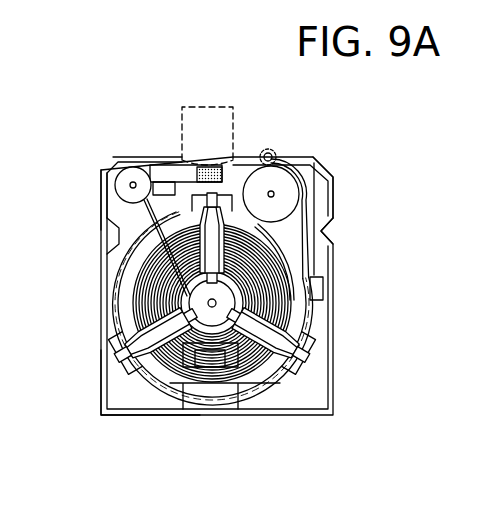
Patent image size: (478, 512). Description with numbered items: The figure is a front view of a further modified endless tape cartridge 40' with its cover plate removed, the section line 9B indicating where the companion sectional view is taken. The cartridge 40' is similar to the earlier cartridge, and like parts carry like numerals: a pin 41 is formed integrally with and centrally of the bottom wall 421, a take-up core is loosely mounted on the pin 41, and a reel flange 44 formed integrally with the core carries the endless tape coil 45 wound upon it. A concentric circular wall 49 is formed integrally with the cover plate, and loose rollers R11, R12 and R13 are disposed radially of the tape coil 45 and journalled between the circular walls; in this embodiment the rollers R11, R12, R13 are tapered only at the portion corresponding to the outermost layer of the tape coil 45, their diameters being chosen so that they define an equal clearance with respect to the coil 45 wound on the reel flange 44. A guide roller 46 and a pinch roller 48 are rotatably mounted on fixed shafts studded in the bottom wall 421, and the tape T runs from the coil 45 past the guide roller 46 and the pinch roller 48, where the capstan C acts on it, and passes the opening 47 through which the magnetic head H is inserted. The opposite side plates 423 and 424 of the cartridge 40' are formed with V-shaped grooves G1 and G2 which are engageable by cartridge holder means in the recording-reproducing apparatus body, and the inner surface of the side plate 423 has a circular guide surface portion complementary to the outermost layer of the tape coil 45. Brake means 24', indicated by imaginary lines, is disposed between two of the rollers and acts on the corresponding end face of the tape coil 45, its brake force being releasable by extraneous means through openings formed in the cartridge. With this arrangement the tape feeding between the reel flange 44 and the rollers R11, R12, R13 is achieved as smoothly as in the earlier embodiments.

The section line 9B is at (208, 105).
The cartridge 40' is at (218, 254).
The side plate 424 is at (102, 219).
The side plate 423 is at (315, 196).
The bottom wall 421 is at (123, 387).
The V-shaped groove G1 is at (102, 240).
The V-shaped groove G2 is at (331, 232).
The opening 47 is at (240, 162).
The magnetic head H is at (221, 122).
The capstan C is at (270, 152).
The endless tape coil 45 is at (275, 320).
The brake means 24' is at (215, 399).
The reel flange 44 is at (263, 378).
The concentric circular wall 49 is at (200, 300).
The tape T is at (120, 212).
The roller R13 is at (207, 258).
The roller R11 is at (160, 383).
The roller R12 is at (255, 375).
The guide roller 46 is at (133, 185).
The pinch roller 48 is at (285, 186).
The pin 41 is at (262, 288).